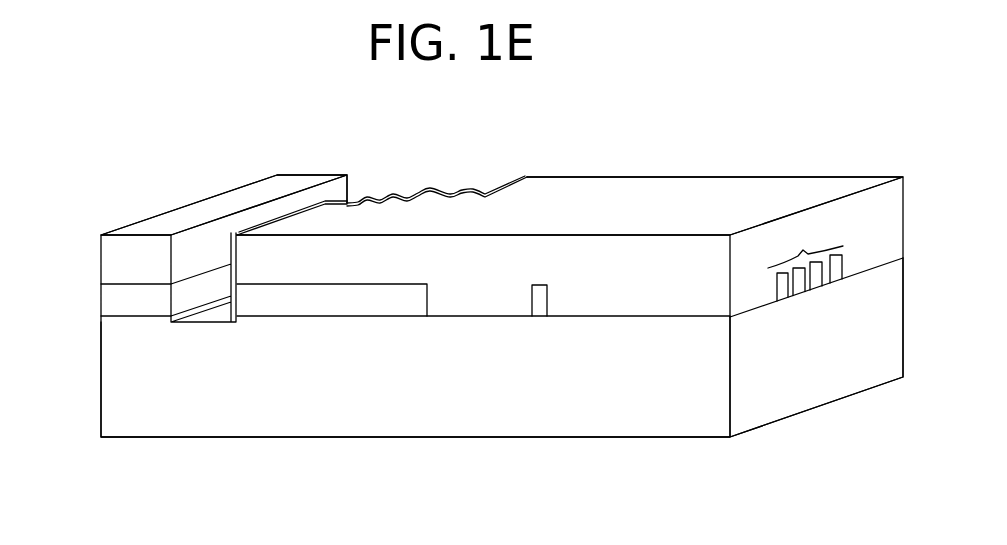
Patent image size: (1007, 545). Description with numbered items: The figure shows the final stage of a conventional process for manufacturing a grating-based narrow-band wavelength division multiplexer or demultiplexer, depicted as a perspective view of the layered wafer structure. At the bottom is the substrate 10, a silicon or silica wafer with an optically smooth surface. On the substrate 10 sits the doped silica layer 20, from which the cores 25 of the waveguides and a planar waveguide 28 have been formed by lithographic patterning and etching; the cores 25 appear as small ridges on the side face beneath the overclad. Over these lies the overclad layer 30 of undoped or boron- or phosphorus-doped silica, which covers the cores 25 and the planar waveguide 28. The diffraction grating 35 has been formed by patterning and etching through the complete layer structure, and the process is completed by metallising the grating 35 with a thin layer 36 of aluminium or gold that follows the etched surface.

The substrate 10 is at (287, 417).
The silica layer 20 is at (108, 300).
The cores 25 is at (540, 302).
The planar waveguide 28 is at (398, 303).
The overclad layer 30 is at (127, 250).
The diffraction grating 35 is at (403, 158).
The layer of aluminium or gold 36 is at (455, 196).